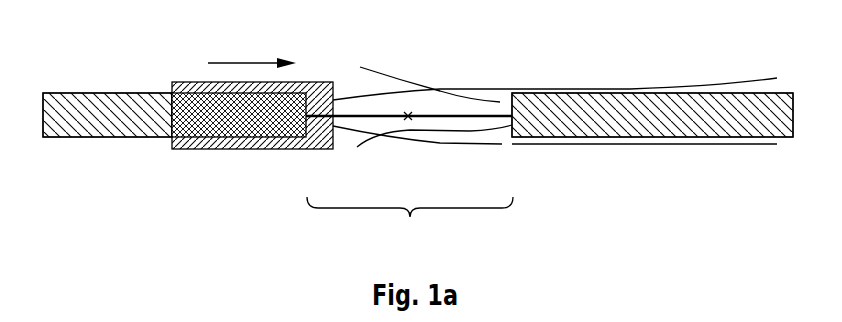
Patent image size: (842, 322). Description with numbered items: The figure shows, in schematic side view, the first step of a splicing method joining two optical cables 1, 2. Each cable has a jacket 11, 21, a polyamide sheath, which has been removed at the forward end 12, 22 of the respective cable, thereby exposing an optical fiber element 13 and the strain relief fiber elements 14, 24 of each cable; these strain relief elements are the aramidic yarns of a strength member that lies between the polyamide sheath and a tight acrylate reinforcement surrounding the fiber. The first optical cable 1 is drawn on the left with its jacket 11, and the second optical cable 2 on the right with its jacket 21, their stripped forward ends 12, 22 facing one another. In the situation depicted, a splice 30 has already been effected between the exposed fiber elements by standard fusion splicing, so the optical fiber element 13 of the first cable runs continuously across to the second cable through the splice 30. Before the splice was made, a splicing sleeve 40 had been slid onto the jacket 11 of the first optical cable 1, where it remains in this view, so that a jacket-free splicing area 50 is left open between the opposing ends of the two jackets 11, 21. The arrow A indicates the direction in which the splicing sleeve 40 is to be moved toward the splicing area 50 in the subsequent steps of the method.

The optical cable 1 is at (129, 84).
The jacket 11 is at (62, 98).
The forward end 12 is at (355, 68).
The optical fiber element 13 is at (397, 118).
The strain relief fiber elements 14 is at (353, 98).
The optical cable 2 is at (604, 77).
The jacket 21 is at (718, 100).
The forward end 22 is at (472, 76).
The strain relief fiber elements 24 is at (500, 102).
The splice 30 is at (412, 98).
The splicing sleeve 40 is at (188, 77).
The jacket-free splicing area 50 is at (410, 222).
The direction of movement A is at (243, 62).